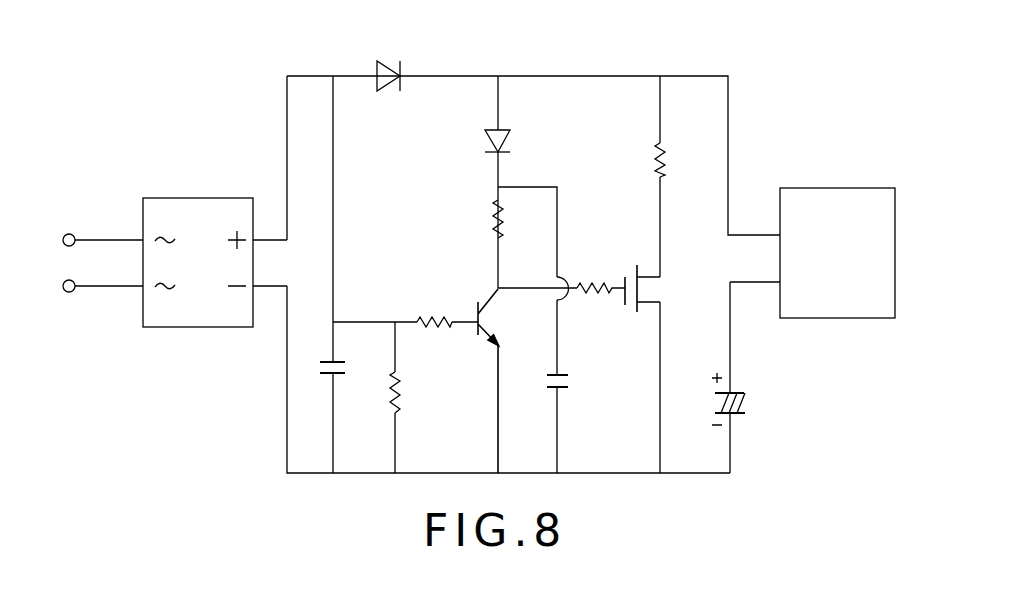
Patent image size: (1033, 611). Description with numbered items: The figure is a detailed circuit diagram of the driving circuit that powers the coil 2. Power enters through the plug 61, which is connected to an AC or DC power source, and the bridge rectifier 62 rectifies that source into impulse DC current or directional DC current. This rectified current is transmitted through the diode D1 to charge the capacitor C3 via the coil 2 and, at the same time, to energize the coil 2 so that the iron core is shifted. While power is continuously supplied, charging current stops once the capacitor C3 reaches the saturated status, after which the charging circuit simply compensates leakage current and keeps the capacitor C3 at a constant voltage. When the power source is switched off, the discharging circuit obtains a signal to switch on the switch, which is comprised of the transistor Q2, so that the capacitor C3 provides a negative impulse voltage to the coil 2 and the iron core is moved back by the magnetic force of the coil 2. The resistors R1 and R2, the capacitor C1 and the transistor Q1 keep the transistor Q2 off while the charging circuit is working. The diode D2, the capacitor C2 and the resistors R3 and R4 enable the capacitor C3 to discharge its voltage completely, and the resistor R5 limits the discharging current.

The plug 61 is at (69, 233).
The bridge rectifier 62 is at (196, 210).
The coil 2 is at (849, 207).
The diode D1 is at (396, 53).
The diode D2 is at (526, 135).
The resistor R1 is at (419, 397).
The resistor R2 is at (405, 303).
The resistor R3 is at (519, 221).
The resistor R4 is at (600, 273).
The resistor R5 is at (682, 161).
The capacitor C1 is at (320, 388).
The capacitor C2 is at (578, 402).
The capacitor C3 is at (753, 399).
The transistor Q1 is at (511, 381).
The transistor Q2 is at (669, 292).